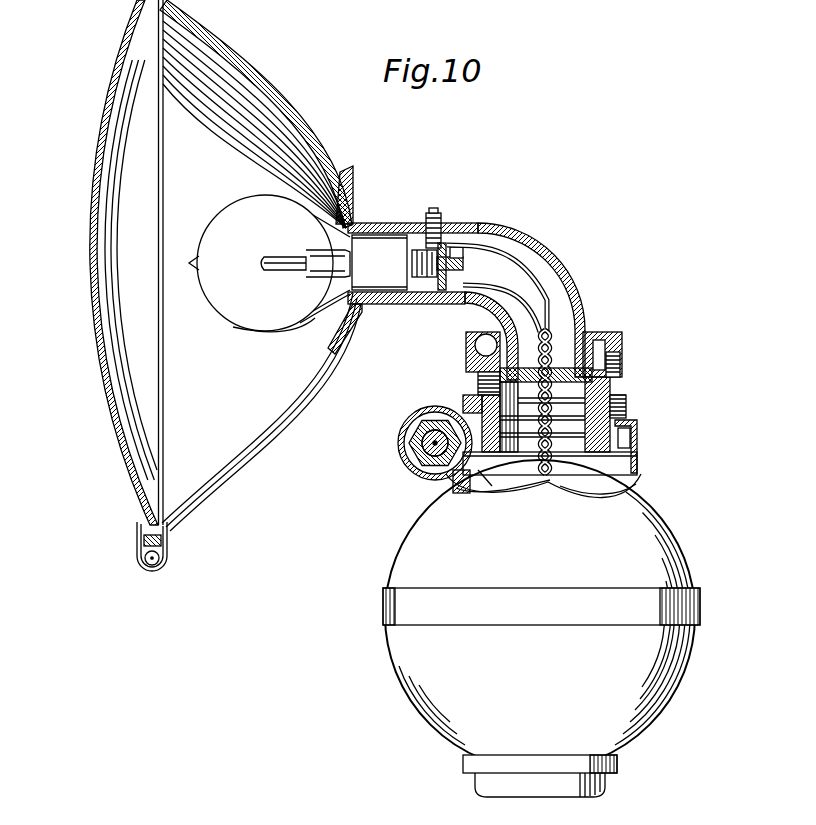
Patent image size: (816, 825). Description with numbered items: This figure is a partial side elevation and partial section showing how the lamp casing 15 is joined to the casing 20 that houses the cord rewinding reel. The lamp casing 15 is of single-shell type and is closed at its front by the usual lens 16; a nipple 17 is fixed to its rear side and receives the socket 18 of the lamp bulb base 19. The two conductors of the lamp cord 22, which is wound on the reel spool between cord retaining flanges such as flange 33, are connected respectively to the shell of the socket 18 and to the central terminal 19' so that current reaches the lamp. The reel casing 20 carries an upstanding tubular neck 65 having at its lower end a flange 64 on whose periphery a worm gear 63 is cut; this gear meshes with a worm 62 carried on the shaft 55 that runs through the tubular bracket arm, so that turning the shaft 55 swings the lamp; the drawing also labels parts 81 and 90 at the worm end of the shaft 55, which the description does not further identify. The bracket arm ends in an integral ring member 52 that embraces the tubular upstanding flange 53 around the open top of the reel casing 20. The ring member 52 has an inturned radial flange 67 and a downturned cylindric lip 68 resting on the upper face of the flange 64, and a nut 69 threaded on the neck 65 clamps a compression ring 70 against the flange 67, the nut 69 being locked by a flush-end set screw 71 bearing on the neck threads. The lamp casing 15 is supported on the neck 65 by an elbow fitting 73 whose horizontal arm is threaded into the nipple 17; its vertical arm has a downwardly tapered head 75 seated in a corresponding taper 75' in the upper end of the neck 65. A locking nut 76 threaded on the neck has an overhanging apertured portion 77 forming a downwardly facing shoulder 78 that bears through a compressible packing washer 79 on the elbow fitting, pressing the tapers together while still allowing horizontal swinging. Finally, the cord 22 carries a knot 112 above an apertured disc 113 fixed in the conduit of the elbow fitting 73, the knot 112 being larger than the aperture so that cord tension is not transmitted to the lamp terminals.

The lamp casing 15 is at (293, 109).
The lens 16 is at (96, 185).
The nipple 17 is at (384, 230).
The socket 18 is at (424, 302).
The lamp bulb base 19 is at (413, 221).
The central terminal 19' is at (450, 242).
The reel casing 20 is at (676, 534).
The lamp cord 22 is at (556, 318).
The cord retaining flange 33 is at (626, 485).
The ring member 52 is at (637, 445).
The tubular upstanding flange 53 is at (618, 457).
The shaft 55 is at (430, 462).
The worm 62 is at (420, 434).
The worm gear 63 is at (463, 472).
The flange 64 is at (493, 470).
The tubular neck 65 is at (500, 418).
The inturned radial flange 67 is at (632, 430).
The downturned cylindric lip 68 is at (470, 434).
The nut 69 is at (618, 395).
The compression ring 70 is at (478, 410).
The set screw 71 is at (624, 405).
The elbow fitting 73 is at (573, 290).
The downwardly tapered head 75 is at (466, 365).
The taper 75' is at (455, 412).
The locking nut 76 is at (624, 350).
The overhanging apertured portion 77 is at (596, 342).
The downwardly facing shoulder 78 is at (478, 352).
The compressible packing washer 79 is at (612, 350).
The knob 81 is at (420, 443).
The knurled ring 90 is at (402, 452).
The knot 112 is at (545, 365).
The apertured disc 113 is at (480, 384).